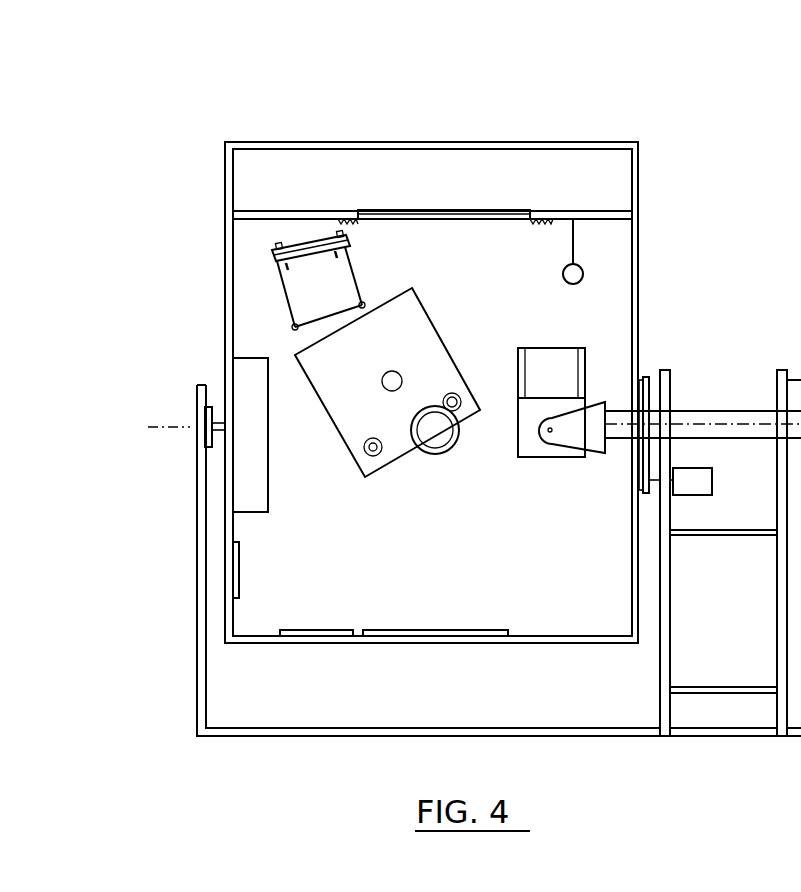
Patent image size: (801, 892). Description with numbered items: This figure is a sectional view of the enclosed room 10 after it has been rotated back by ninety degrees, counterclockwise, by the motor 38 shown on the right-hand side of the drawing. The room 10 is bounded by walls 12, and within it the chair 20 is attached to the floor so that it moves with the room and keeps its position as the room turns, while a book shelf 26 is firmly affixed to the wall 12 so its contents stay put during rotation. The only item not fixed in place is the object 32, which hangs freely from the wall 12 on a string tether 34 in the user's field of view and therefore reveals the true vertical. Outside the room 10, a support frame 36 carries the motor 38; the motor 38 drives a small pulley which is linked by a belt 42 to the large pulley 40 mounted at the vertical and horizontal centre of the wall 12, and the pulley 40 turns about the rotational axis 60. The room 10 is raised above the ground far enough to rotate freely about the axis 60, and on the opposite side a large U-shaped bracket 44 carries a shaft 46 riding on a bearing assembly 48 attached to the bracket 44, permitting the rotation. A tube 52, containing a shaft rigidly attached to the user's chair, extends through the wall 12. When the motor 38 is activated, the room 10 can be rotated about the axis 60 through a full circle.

The enclosed room 10 is at (628, 103).
The walls 12 is at (225, 301).
The chair 20 is at (342, 432).
The book shelf 26 is at (258, 514).
The object 32 is at (565, 282).
The string tether 34 is at (572, 236).
The support frame 36 is at (727, 694).
The motor 38 is at (695, 496).
The large pulley 40 is at (646, 377).
The belt 42 is at (640, 492).
The U-shaped bracket 44 is at (198, 506).
The shaft 46 is at (219, 432).
The bearing assembly 48 is at (209, 406).
The tube 52 is at (693, 410).
The rotational axis 60 is at (170, 428).